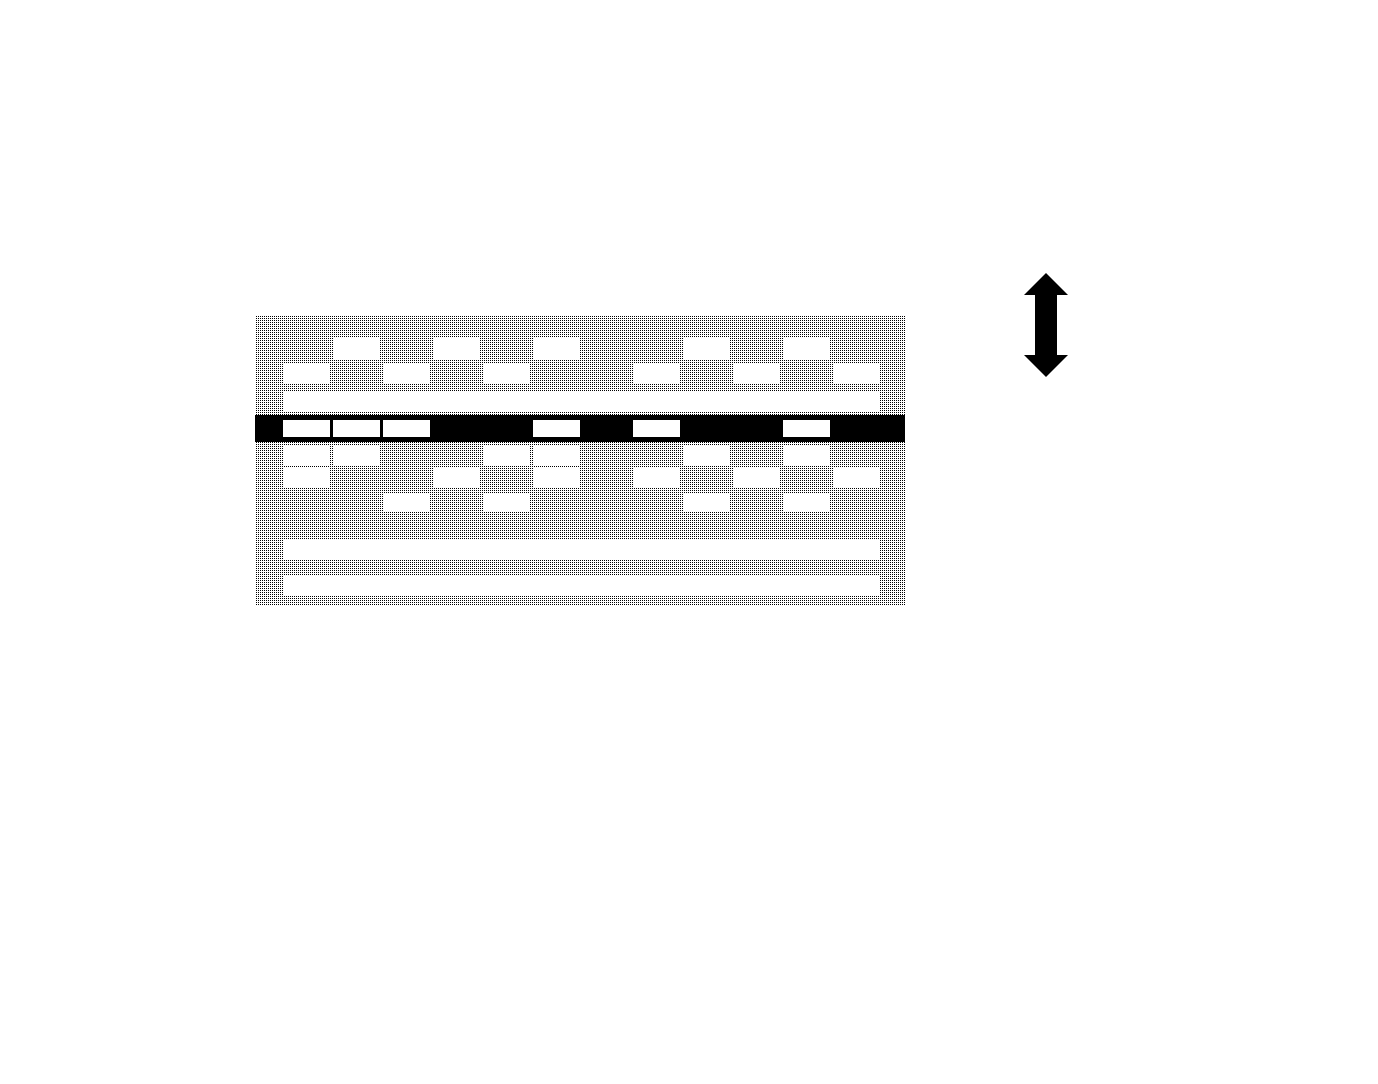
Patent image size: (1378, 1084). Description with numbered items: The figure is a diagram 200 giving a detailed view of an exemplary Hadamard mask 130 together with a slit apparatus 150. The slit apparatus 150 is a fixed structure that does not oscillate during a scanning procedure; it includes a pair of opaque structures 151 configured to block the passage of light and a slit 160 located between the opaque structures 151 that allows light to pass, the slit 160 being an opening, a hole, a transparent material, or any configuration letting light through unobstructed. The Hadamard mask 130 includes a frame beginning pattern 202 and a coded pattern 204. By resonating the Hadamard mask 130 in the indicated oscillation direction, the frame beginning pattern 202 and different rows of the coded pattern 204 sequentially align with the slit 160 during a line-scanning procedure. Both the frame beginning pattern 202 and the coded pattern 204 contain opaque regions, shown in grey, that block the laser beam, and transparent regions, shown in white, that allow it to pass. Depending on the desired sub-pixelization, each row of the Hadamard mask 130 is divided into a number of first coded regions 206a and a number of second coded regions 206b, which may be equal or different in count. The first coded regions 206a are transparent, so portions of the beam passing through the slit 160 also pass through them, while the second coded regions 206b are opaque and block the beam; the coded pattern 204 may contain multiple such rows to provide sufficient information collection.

The diagram 200 is at (55, 70).
The slit apparatus 150 is at (127, 218).
The opaque structures 151 is at (592, 276).
The slit 160 is at (180, 437).
The Hadamard mask 130 is at (737, 362).
The coded pattern 204 is at (238, 418).
The first coded regions 206a is at (882, 401).
The second coded regions 206b is at (853, 333).
The frame beginning pattern 202 is at (872, 543).